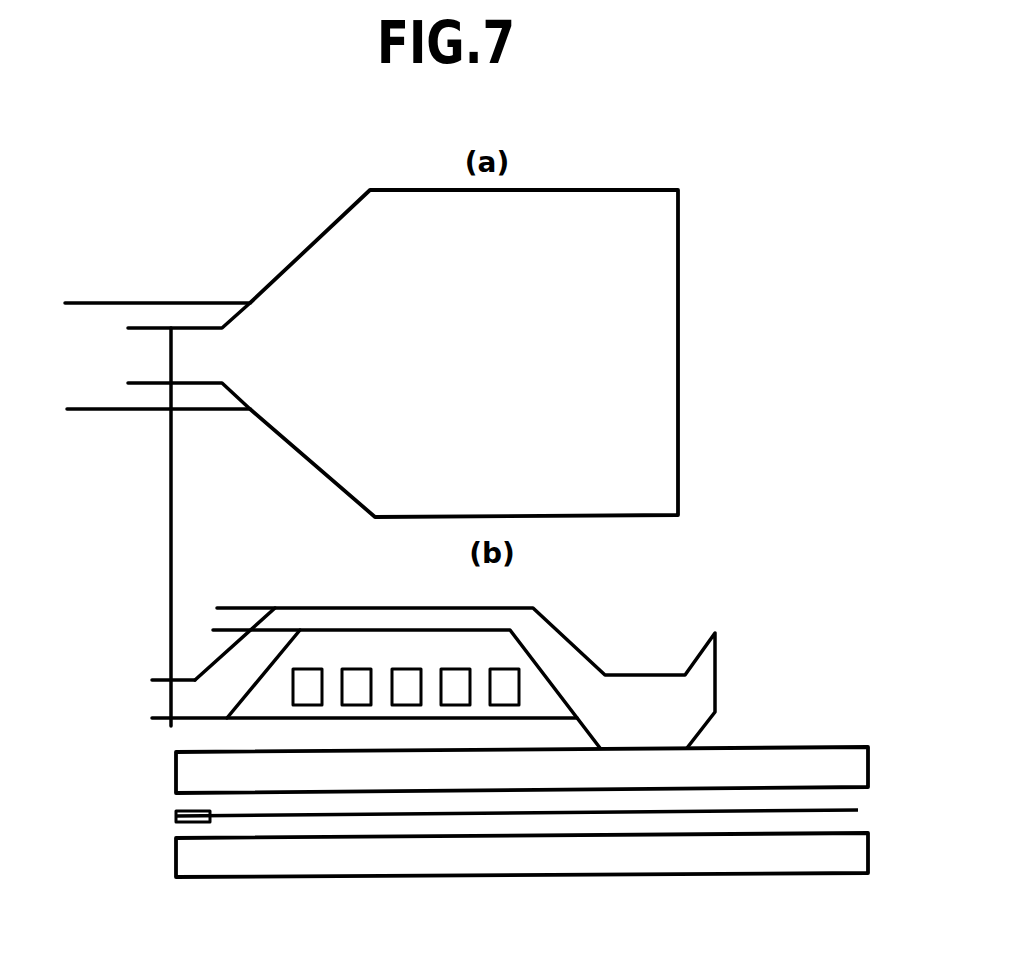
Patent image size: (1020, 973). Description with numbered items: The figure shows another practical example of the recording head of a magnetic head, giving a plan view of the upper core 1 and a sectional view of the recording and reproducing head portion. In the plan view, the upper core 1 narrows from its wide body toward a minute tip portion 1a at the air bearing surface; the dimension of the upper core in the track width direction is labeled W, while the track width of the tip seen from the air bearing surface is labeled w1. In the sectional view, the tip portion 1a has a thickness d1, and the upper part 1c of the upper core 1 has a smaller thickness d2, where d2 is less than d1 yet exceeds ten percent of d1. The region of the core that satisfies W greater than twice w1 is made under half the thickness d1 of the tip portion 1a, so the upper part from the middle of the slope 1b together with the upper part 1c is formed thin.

The upper core 1 is at (662, 357).
The tip portion of upper core 1a is at (197, 344).
The slope 1b is at (248, 657).
The upper part of upper core 1c is at (357, 618).
The track width direction dimension of upper core W is at (97, 303).
The track width of upper core tip w1 is at (152, 328).
The thickness of tip portion d1 is at (138, 704).
The thickness of upper part d2 is at (198, 624).